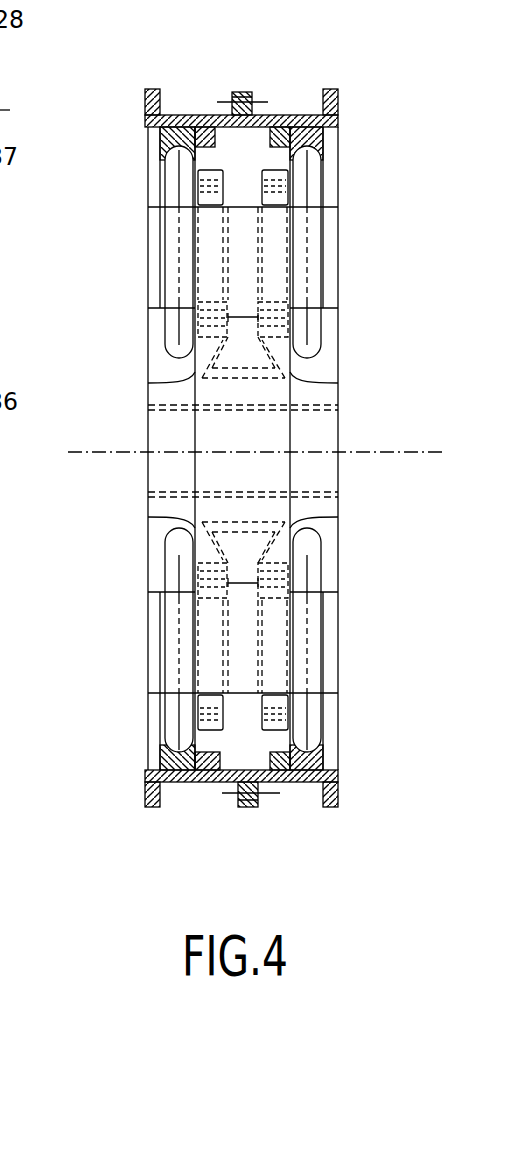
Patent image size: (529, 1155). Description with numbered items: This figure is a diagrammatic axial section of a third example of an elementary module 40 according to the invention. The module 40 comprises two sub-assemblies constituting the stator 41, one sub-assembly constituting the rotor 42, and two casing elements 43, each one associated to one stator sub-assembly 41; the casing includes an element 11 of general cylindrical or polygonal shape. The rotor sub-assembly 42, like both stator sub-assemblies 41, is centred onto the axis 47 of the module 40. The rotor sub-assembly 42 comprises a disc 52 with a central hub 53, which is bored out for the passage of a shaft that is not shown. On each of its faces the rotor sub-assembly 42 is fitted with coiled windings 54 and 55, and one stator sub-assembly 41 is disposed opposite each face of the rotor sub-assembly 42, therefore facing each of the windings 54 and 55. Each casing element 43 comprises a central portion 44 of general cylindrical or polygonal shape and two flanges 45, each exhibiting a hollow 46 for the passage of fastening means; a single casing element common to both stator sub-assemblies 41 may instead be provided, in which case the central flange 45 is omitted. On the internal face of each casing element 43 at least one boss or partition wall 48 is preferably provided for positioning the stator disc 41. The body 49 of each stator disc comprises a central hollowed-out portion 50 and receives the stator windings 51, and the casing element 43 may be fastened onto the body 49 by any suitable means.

The element 11 is at (302, 113).
The elementary module 40 is at (113, 503).
The stator sub-assembly 41 is at (143, 118).
The rotor sub-assembly 42 is at (252, 198).
The casing element 43 is at (210, 795).
The central portion 44 is at (184, 786).
The flange 45 is at (235, 92).
The hollow 46 is at (152, 795).
The axis 47 is at (395, 455).
The partition wall 48 is at (268, 112).
The body 49 is at (148, 246).
The central hollowed-out portion 50 is at (165, 376).
The stator windings 51 is at (165, 330).
The disc 52 is at (250, 635).
The central hub 53 is at (336, 422).
The coiled winding 54 is at (215, 648).
The coiled winding 55 is at (275, 197).